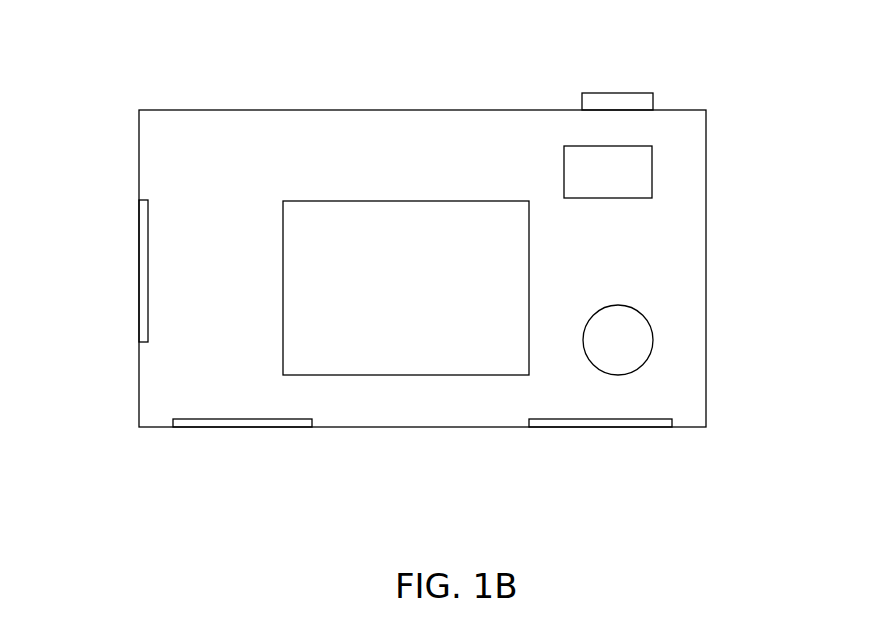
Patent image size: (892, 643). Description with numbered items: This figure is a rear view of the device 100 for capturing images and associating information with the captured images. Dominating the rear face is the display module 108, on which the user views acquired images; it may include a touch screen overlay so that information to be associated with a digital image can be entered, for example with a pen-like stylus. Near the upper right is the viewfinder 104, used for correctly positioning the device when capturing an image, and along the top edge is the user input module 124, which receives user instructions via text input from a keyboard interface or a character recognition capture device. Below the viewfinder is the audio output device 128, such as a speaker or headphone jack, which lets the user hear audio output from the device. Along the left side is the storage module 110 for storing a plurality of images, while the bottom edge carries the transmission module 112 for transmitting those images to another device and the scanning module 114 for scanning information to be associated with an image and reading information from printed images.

The device 100 is at (355, 110).
The viewfinder 104 is at (571, 198).
The display module 108 is at (320, 200).
The storage module 110 is at (138, 250).
The transmission module 112 is at (188, 428).
The scanning module 114 is at (562, 428).
The user input module 124 is at (653, 103).
The audio output device 128 is at (617, 305).